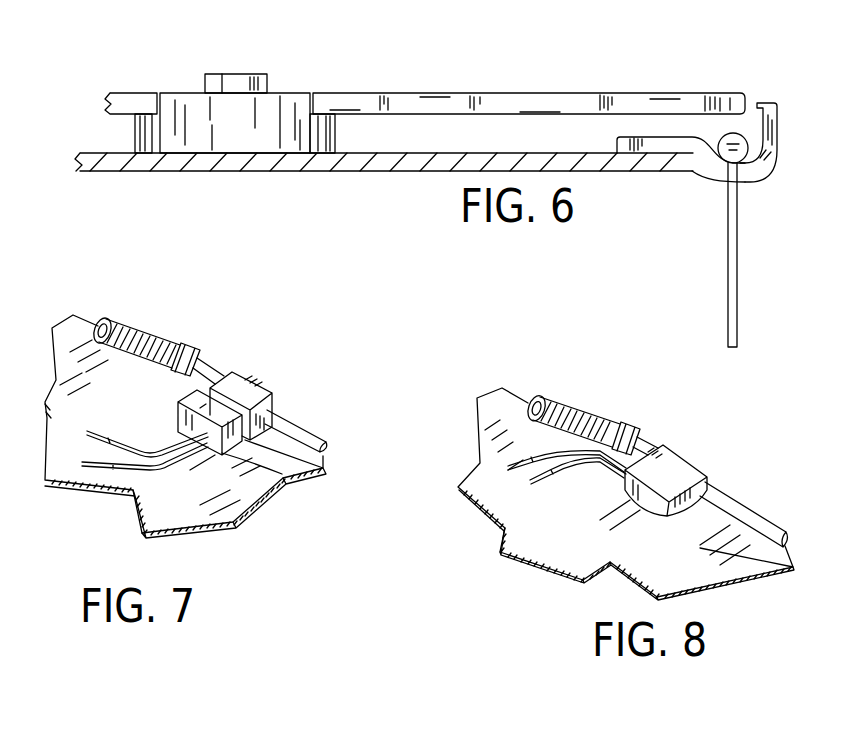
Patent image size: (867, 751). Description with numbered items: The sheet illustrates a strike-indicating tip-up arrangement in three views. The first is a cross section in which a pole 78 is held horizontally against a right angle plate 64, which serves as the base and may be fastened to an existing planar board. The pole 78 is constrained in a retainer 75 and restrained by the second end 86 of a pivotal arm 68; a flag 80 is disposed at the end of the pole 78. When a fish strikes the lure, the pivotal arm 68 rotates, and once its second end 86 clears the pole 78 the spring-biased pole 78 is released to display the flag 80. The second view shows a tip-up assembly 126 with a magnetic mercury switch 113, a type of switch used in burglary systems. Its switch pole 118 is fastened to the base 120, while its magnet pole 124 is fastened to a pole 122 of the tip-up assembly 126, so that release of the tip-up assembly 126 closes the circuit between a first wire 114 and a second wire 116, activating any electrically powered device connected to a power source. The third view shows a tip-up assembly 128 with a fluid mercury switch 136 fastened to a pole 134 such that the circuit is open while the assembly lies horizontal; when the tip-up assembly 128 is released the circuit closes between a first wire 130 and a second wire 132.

In FIG. 6, the right angle plate 64 is at (317, 173).
In FIG. 6, the pivotal arm 68 is at (521, 100).
In FIG. 6, the retainer 75 is at (778, 102).
In FIG. 6, the pole 78 is at (728, 162).
In FIG. 6, the flag 80 is at (728, 250).
In FIG. 6, the second end 86 is at (663, 95).
In FIG. 7, the magnetic mercury switch 113 is at (283, 484).
In FIG. 7, the first wire 114 is at (138, 443).
In FIG. 7, the second wire 116 is at (128, 468).
In FIG. 7, the switch pole 118 is at (213, 450).
In FIG. 7, the base 120 is at (240, 517).
In FIG. 7, the pole 122 is at (298, 418).
In FIG. 7, the magnet pole 124 is at (236, 378).
In FIG. 7, the tip-up assembly 126 is at (142, 325).
In FIG. 8, the tip-up assembly 128 is at (582, 398).
In FIG. 8, the first wire 130 is at (552, 450).
In FIG. 8, the second wire 132 is at (569, 468).
In FIG. 8, the pole 134 is at (733, 502).
In FIG. 8, the fluid mercury switch 136 is at (677, 448).